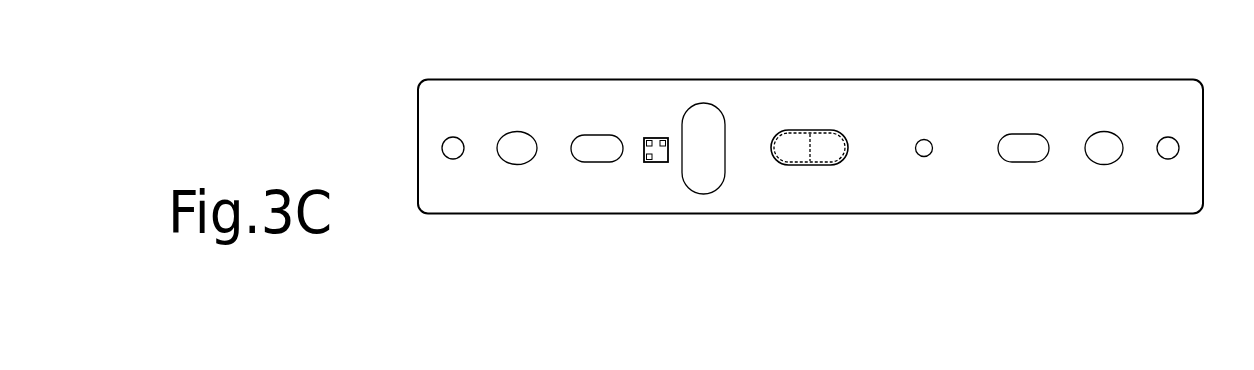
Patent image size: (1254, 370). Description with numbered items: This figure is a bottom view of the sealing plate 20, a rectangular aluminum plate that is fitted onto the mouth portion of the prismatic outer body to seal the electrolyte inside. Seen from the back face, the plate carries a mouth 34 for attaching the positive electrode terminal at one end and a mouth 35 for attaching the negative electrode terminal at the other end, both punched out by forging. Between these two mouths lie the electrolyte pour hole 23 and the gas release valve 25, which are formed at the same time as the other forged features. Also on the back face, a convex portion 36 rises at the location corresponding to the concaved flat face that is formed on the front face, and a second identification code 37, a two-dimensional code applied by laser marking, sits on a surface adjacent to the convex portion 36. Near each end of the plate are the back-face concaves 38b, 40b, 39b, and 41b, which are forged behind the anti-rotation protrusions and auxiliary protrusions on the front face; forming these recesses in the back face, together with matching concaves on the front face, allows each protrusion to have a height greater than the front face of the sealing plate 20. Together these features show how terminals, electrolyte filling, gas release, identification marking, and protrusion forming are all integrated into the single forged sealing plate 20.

The sealing plate 20 is at (823, 93).
The electrolyte pour hole 23 is at (927, 138).
The gas release valve 25 is at (793, 153).
The mouth 34 is at (1102, 147).
The mouth 35 is at (520, 140).
The convex portion 36 is at (705, 116).
The second identification code 37 is at (652, 163).
The concave 38b is at (1027, 153).
The concave 39b is at (1167, 153).
The concave 40b is at (595, 155).
The concave 41b is at (453, 153).